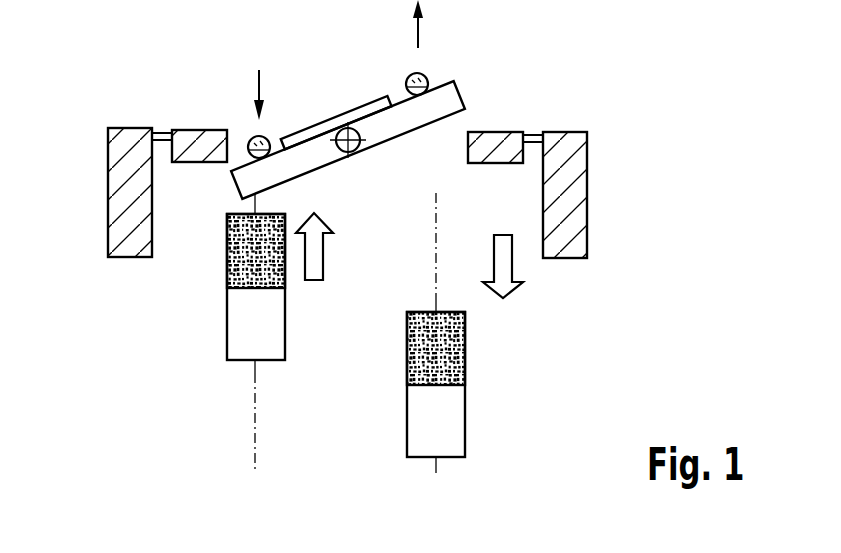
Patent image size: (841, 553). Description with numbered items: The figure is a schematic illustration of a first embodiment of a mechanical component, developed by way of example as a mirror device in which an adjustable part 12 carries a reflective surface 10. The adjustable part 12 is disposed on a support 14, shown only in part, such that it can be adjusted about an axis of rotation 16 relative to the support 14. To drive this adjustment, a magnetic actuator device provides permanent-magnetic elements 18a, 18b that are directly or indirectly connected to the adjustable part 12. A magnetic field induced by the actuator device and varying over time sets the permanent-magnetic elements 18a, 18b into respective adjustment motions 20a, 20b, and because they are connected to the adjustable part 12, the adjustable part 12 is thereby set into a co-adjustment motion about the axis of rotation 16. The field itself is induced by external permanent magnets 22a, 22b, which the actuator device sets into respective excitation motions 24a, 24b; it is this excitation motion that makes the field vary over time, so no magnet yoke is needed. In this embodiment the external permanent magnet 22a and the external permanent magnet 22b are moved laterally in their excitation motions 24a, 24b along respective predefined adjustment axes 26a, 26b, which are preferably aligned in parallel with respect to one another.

The reflective surface 10 is at (327, 106).
The adjustable part 12 is at (406, 122).
The support 14 is at (118, 186).
The axis of rotation 16 is at (366, 155).
The permanent-magnetic element 18a is at (252, 138).
The permanent-magnetic element 18b is at (427, 78).
The adjustment motion 20a is at (258, 82).
The adjustment motion 20b is at (418, 28).
The external permanent magnet 22a is at (227, 272).
The external permanent magnet 22b is at (465, 368).
The excitation motion 24a is at (317, 247).
The excitation motion 24b is at (508, 262).
The adjustment axis 26a is at (253, 403).
The adjustment axis 26b is at (436, 275).